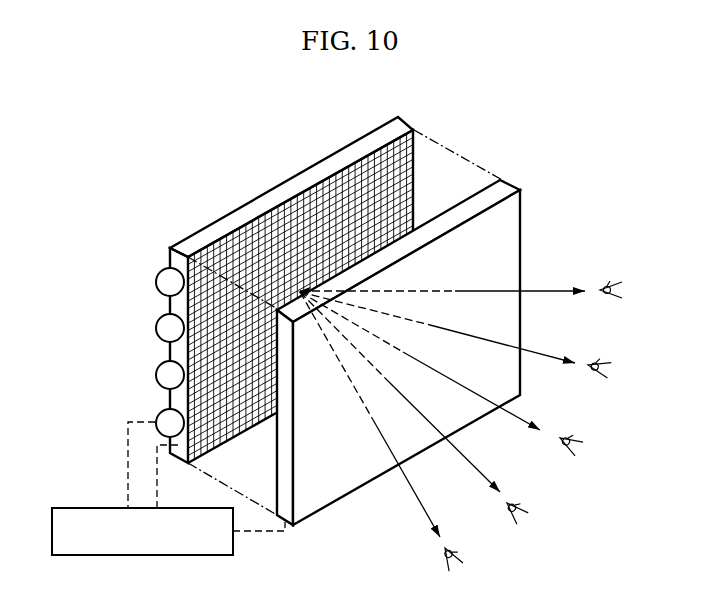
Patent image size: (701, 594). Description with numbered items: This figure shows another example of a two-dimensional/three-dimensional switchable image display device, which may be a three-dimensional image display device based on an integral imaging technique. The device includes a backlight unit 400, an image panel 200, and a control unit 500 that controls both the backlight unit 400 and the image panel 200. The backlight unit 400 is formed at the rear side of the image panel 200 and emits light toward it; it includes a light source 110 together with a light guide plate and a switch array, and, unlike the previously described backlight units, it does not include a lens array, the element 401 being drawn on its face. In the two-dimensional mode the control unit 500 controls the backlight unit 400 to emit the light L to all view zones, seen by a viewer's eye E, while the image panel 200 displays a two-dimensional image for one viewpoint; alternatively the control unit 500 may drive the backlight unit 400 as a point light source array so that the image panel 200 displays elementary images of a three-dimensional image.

The backlight unit 400 is at (331, 267).
The micro lens array 401 is at (405, 163).
The image panel 200 is at (510, 187).
The light source 110 is at (159, 412).
The control unit 500 is at (63, 508).
The light L is at (543, 290).
The viewer eye E is at (612, 287).